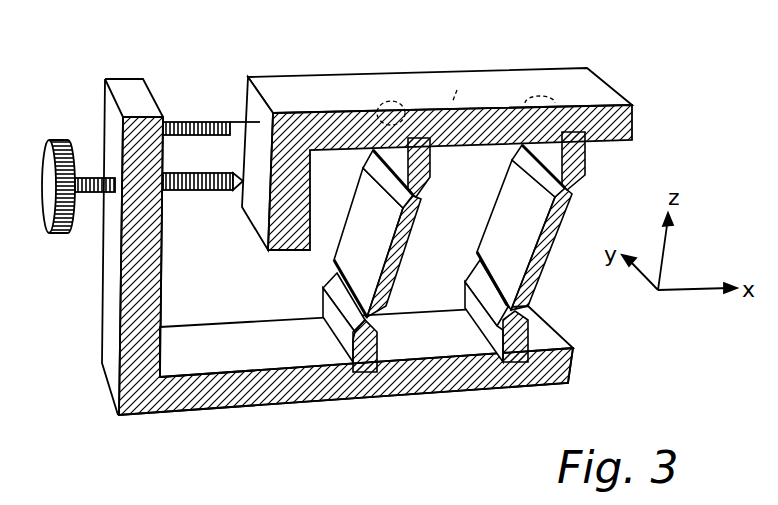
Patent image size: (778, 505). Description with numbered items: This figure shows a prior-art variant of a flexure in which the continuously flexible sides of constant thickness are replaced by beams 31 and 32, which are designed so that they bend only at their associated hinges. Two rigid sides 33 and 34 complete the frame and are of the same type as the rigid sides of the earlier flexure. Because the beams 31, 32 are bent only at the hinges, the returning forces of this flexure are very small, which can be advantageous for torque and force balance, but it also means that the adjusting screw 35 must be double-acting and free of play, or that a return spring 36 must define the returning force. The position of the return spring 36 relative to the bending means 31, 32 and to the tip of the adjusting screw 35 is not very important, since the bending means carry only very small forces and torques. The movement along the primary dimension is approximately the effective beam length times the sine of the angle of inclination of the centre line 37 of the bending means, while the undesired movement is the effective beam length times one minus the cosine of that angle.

The beam 31 is at (404, 262).
The beam 32 is at (543, 277).
The rigid side 33 is at (437, 392).
The rigid side 34 is at (493, 83).
The adjusting screw 35 is at (60, 140).
The return spring 36 is at (198, 122).
The centre line 37 is at (350, 372).